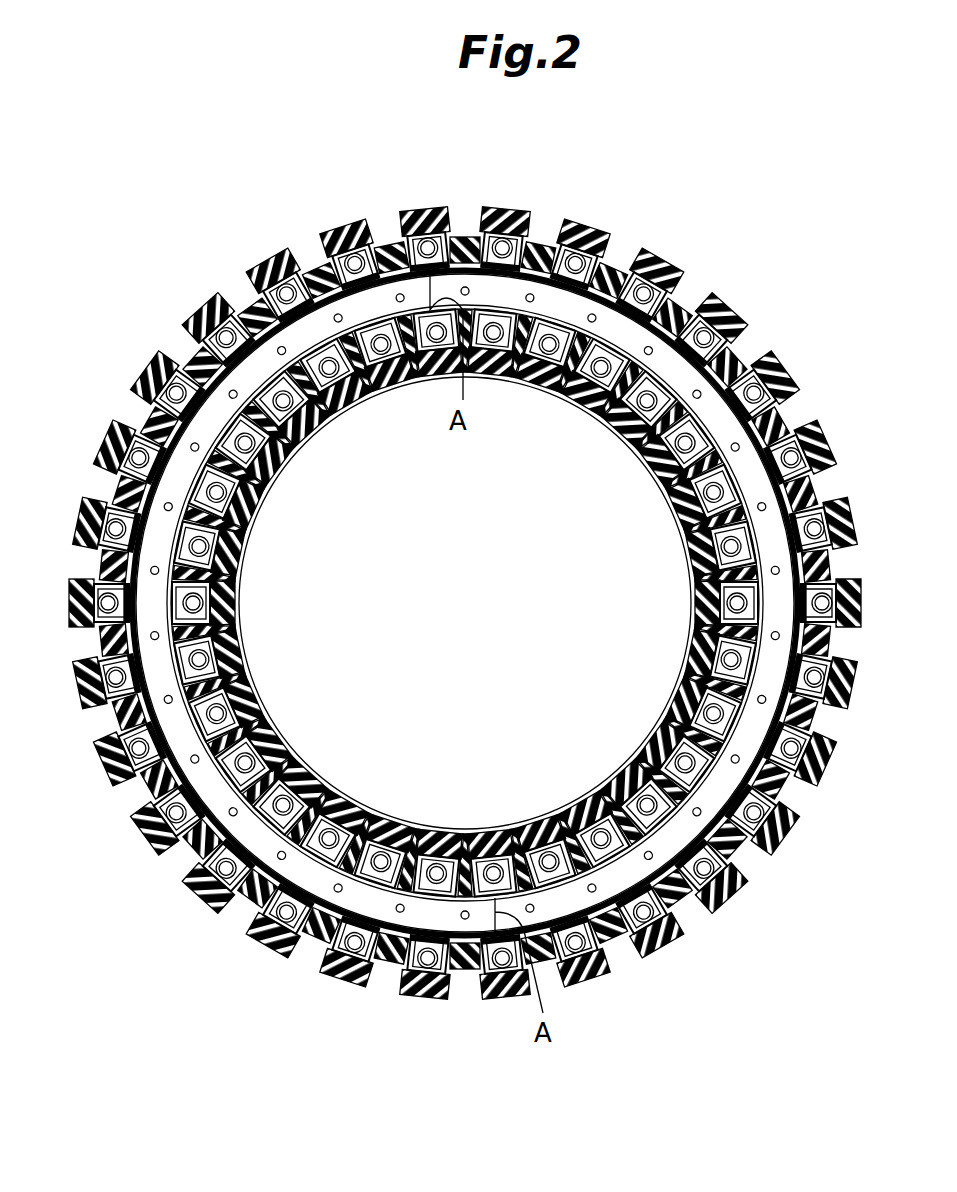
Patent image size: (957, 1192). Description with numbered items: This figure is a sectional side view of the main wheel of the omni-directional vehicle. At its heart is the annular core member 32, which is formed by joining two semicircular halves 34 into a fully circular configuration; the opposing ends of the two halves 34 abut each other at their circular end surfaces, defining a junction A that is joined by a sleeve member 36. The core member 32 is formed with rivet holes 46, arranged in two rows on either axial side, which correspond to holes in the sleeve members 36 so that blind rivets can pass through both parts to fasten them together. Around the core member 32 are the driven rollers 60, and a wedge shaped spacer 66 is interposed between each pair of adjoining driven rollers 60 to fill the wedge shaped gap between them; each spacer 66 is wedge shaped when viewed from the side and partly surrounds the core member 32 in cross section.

The annular core member 32 is at (610, 267).
The semicircular halves 34 is at (253, 327).
The sleeve member 36 is at (552, 272).
The rivet holes 46 is at (283, 354).
The driven rollers 60 is at (418, 207).
The wedge shaped spacer 66 is at (390, 256).